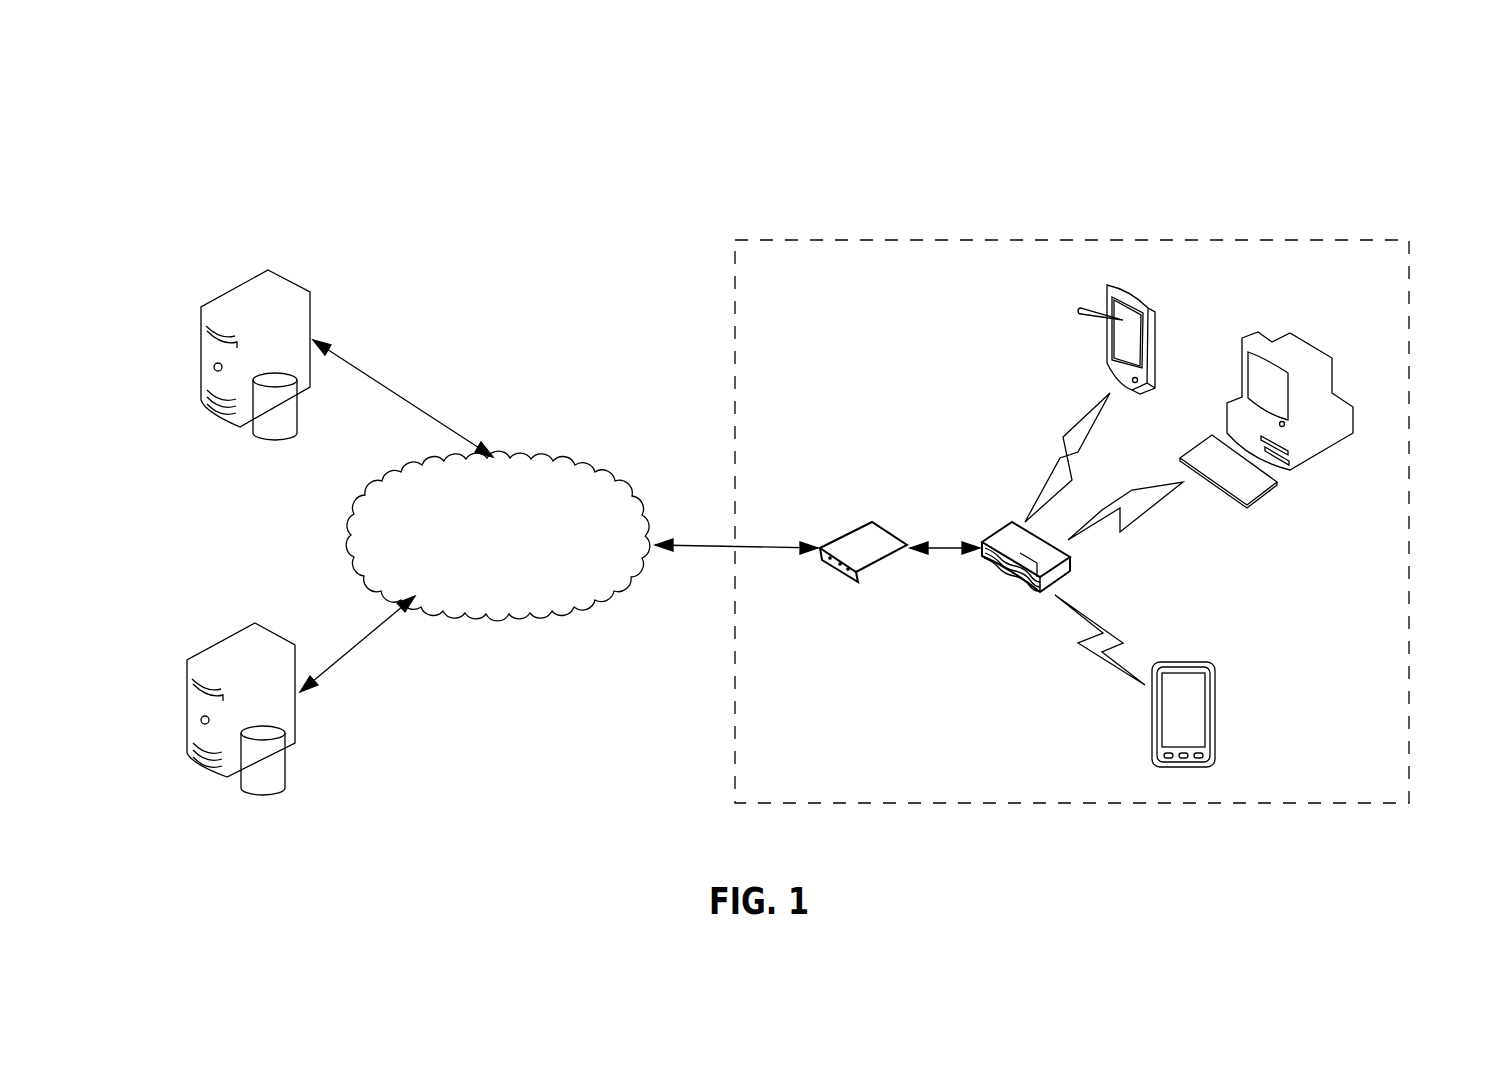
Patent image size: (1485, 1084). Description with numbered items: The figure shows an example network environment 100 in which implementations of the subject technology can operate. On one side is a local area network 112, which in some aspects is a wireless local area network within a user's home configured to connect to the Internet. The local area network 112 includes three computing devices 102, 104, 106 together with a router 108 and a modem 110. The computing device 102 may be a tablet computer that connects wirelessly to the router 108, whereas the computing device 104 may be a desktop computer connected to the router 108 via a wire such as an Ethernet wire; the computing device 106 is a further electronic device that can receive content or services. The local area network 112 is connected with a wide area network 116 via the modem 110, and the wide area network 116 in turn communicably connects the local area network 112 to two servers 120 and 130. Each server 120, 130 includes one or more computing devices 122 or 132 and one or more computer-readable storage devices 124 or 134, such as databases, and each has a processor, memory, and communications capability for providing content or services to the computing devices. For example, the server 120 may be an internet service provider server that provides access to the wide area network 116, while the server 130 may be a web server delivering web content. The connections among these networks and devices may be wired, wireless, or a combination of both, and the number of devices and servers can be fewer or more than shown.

The network environment 100 is at (1342, 123).
The computing device 102 is at (1132, 292).
The computing device 104 is at (1300, 337).
The computing device 106 is at (1197, 662).
The router 108 is at (1010, 581).
The modem 110 is at (858, 583).
The local area network 112 is at (1132, 240).
The wide area network 116 is at (478, 550).
The server 120 is at (251, 356).
The computing device 122 is at (255, 277).
The computer-readable storage device 124 is at (290, 436).
The server 130 is at (246, 707).
The computing device 132 is at (213, 643).
The computer-readable storage device 134 is at (273, 791).